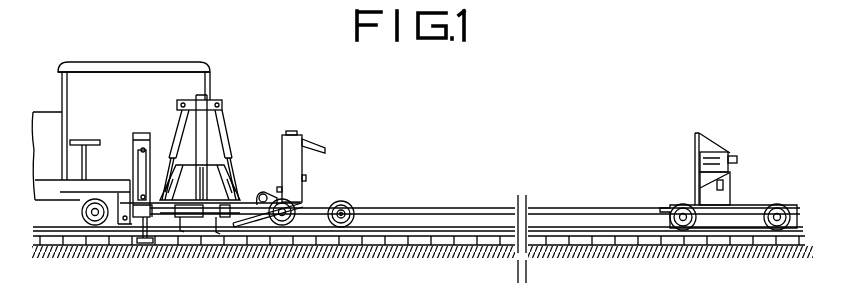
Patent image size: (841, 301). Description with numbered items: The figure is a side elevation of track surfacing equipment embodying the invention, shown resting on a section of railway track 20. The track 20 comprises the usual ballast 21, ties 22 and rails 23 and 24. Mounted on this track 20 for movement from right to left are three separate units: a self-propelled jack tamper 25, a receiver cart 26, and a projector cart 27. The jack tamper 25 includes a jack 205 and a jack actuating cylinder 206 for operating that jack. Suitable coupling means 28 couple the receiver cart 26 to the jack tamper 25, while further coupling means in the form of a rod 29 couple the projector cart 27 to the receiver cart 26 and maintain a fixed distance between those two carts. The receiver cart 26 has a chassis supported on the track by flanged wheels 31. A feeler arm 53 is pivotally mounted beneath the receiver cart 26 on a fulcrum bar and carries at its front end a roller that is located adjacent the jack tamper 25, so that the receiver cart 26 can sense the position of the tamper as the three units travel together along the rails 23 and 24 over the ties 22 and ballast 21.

The railway track 20 is at (422, 237).
The ballast 21 is at (443, 251).
The ties 22 is at (350, 243).
The rail 23 is at (622, 233).
The rail 24 is at (798, 227).
The jack tamper 25 is at (161, 56).
The receiver cart 26 is at (337, 139).
The projector cart 27 is at (729, 142).
The coupling means 28 is at (243, 200).
The rod 29 is at (456, 208).
The flanged wheels 31 is at (345, 203).
The feeler arm 53 is at (250, 200).
The jack 205 is at (147, 244).
The jack actuating cylinder 206 is at (140, 158).